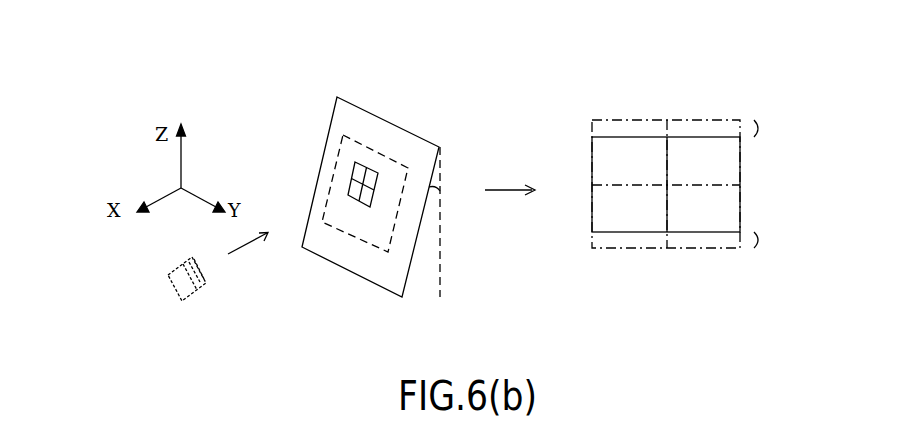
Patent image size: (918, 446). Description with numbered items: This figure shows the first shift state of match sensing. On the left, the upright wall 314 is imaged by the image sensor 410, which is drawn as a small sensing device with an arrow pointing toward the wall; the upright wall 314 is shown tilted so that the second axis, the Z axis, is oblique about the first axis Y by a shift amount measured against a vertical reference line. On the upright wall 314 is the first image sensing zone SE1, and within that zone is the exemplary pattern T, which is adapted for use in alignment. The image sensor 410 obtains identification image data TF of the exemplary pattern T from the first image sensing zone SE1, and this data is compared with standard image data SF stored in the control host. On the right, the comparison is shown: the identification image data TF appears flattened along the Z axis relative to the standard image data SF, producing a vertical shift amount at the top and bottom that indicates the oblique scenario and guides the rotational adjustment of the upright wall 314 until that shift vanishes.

The image sensor 410 is at (190, 297).
The upright wall 314 is at (410, 130).
The first image sensing zone SE1 is at (383, 156).
The exemplary pattern T is at (362, 162).
The standard image data SF is at (608, 120).
The identification image data TF is at (689, 137).